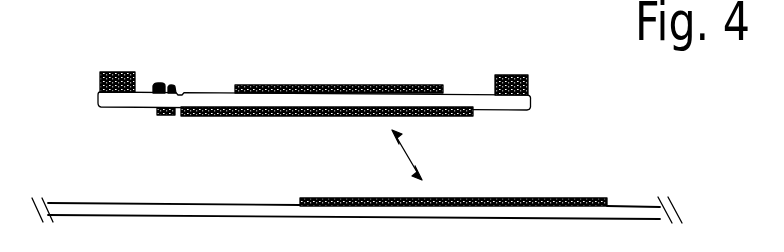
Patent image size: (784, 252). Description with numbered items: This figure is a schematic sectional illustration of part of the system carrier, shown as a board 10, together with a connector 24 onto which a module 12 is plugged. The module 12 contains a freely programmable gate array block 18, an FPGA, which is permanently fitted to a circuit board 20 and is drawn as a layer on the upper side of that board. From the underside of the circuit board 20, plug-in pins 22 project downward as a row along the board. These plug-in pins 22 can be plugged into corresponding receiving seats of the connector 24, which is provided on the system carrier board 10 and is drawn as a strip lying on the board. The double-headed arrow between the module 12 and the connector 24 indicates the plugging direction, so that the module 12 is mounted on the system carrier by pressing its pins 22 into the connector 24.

The system carrier board 10 is at (162, 205).
The module 12 is at (558, 103).
The freely programmable gate array block 18 is at (330, 86).
The circuit board 20 is at (506, 101).
The plug-in pins 22 is at (327, 117).
The connector 24 is at (565, 198).